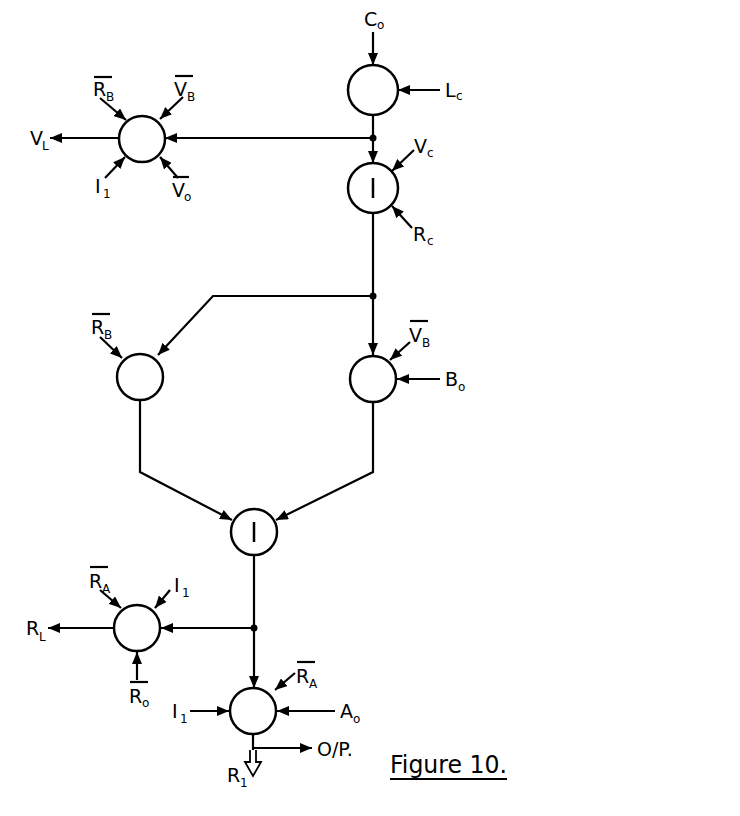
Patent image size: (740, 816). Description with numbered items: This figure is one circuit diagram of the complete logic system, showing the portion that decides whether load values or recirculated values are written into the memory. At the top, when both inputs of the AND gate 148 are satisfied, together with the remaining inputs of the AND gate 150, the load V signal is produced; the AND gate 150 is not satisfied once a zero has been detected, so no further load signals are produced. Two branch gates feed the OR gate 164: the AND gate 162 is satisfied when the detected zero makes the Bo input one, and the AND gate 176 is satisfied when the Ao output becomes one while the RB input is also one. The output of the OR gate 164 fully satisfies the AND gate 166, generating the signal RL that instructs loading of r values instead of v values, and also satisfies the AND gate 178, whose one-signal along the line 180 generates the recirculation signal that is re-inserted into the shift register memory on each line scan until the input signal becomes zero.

The AND gate 148 is at (352, 80).
The AND gate 150 is at (142, 116).
The AND gate 162 is at (350, 378).
The OR gate 164 is at (275, 548).
The AND gate 166 is at (120, 646).
The AND gate 176 is at (117, 378).
The AND gate 178 is at (236, 690).
The line 180 is at (250, 748).